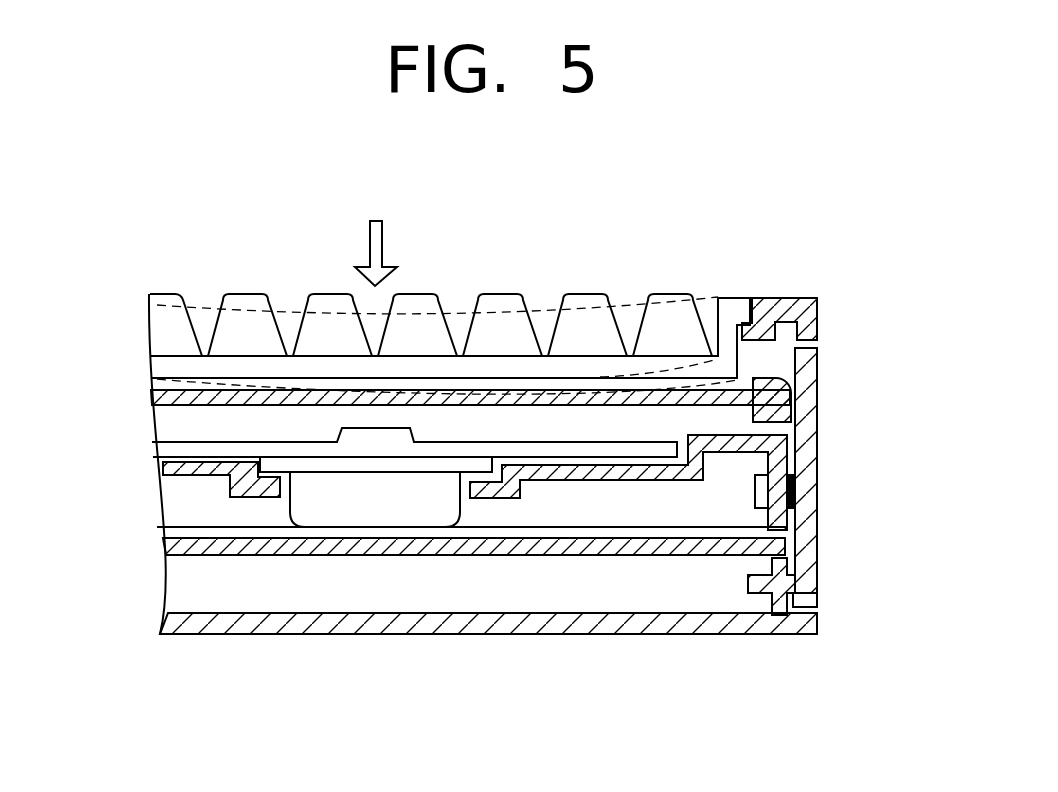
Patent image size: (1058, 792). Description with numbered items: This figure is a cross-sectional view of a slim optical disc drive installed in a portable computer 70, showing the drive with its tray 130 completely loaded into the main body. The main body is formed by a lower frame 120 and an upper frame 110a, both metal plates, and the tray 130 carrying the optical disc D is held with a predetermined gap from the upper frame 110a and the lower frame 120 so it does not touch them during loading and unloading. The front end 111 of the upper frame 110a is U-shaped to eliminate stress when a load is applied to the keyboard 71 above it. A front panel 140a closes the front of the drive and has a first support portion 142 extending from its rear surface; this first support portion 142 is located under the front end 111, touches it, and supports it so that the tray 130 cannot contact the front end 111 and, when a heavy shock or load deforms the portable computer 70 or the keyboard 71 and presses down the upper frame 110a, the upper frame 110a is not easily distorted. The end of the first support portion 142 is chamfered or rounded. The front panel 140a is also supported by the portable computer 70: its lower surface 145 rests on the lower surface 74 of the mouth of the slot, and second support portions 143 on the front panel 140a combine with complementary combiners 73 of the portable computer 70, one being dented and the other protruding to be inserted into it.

The keyboard 71 is at (500, 293).
The portable computer 70 is at (763, 297).
The front end 111 is at (775, 380).
The first support portion 142 is at (799, 377).
The front panel 140a is at (821, 408).
The upper frame 110a is at (151, 400).
The optical disc D is at (183, 447).
The tray 130 is at (165, 475).
The lower frame 120 is at (170, 548).
The lower surface 145 is at (818, 604).
The lower surface of the mouth of the slot 74 is at (818, 622).
The combiner 73 is at (745, 588).
The second support portion 143 is at (779, 585).